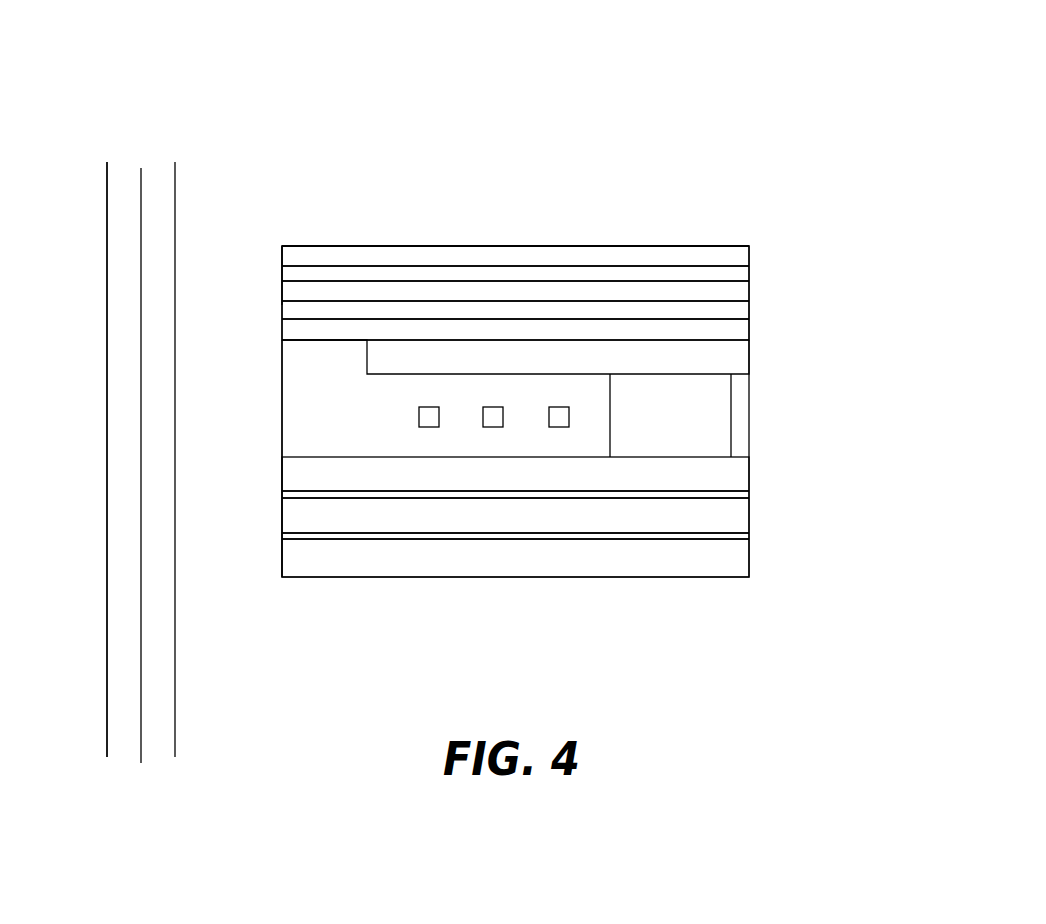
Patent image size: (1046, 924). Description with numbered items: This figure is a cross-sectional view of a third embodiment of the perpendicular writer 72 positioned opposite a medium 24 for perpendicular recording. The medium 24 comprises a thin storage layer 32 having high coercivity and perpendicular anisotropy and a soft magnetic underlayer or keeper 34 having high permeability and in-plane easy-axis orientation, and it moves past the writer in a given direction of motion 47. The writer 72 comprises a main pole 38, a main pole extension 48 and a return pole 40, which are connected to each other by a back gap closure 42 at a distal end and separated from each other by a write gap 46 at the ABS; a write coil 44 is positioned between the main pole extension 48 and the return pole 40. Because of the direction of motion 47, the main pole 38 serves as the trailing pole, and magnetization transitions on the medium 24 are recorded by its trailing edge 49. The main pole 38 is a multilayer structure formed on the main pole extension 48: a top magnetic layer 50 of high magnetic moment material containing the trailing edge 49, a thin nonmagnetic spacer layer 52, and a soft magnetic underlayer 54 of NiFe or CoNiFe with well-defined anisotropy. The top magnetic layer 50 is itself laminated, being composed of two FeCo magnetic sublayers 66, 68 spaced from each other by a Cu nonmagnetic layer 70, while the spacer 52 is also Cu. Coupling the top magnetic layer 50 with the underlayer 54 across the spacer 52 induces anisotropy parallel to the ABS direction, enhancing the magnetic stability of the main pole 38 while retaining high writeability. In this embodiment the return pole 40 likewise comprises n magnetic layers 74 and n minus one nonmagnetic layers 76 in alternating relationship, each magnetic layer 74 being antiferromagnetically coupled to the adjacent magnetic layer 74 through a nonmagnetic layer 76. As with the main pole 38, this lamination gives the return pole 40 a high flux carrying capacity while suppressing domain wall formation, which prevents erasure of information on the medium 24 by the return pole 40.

The medium 24 is at (155, 120).
The thin storage layer 32 is at (158, 195).
The soft magnetic underlayer 34 is at (122, 208).
The direction of motion 47 is at (142, 895).
The perpendicular writer 72 is at (661, 107).
The main pole 38 is at (757, 340).
The magnetic sublayer 66 is at (322, 257).
The nonmagnetic layer 70 is at (380, 275).
The magnetic sublayer 68 is at (427, 293).
The nonmagnetic spacer layer 52 is at (493, 310).
The magnetic underlayer 54 is at (560, 329).
The trailing edge 49 is at (280, 246).
The top magnetic layer 50 is at (278, 305).
The main pole extension 48 is at (367, 362).
The back gap closure 42 is at (731, 421).
The write coil 44 is at (550, 405).
The write gap 46 is at (278, 457).
The return pole 40 is at (779, 518).
The magnetic layer 74 is at (396, 473).
The nonmagnetic layer 76 is at (440, 495).
The air bearing surface ABS is at (268, 530).